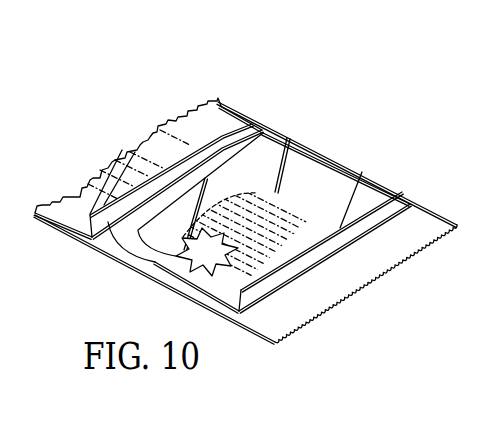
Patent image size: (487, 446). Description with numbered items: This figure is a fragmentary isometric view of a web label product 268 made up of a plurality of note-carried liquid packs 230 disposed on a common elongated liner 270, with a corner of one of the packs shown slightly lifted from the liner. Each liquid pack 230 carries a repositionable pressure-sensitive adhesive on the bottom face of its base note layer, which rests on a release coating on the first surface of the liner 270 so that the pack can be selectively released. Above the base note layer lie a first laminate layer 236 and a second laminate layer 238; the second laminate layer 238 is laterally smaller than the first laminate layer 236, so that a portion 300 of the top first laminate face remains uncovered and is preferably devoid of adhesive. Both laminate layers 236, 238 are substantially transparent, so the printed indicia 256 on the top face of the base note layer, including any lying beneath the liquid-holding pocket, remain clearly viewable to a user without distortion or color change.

The note-carried liquid pack 230 is at (313, 118).
The web label product 268 is at (141, 110).
The elongated liner 270 is at (293, 305).
The printed indicia 256 is at (333, 200).
The uncovered portion 300 is at (290, 164).
The second laminate layer 238 is at (178, 246).
The first laminate layer 236 is at (220, 291).